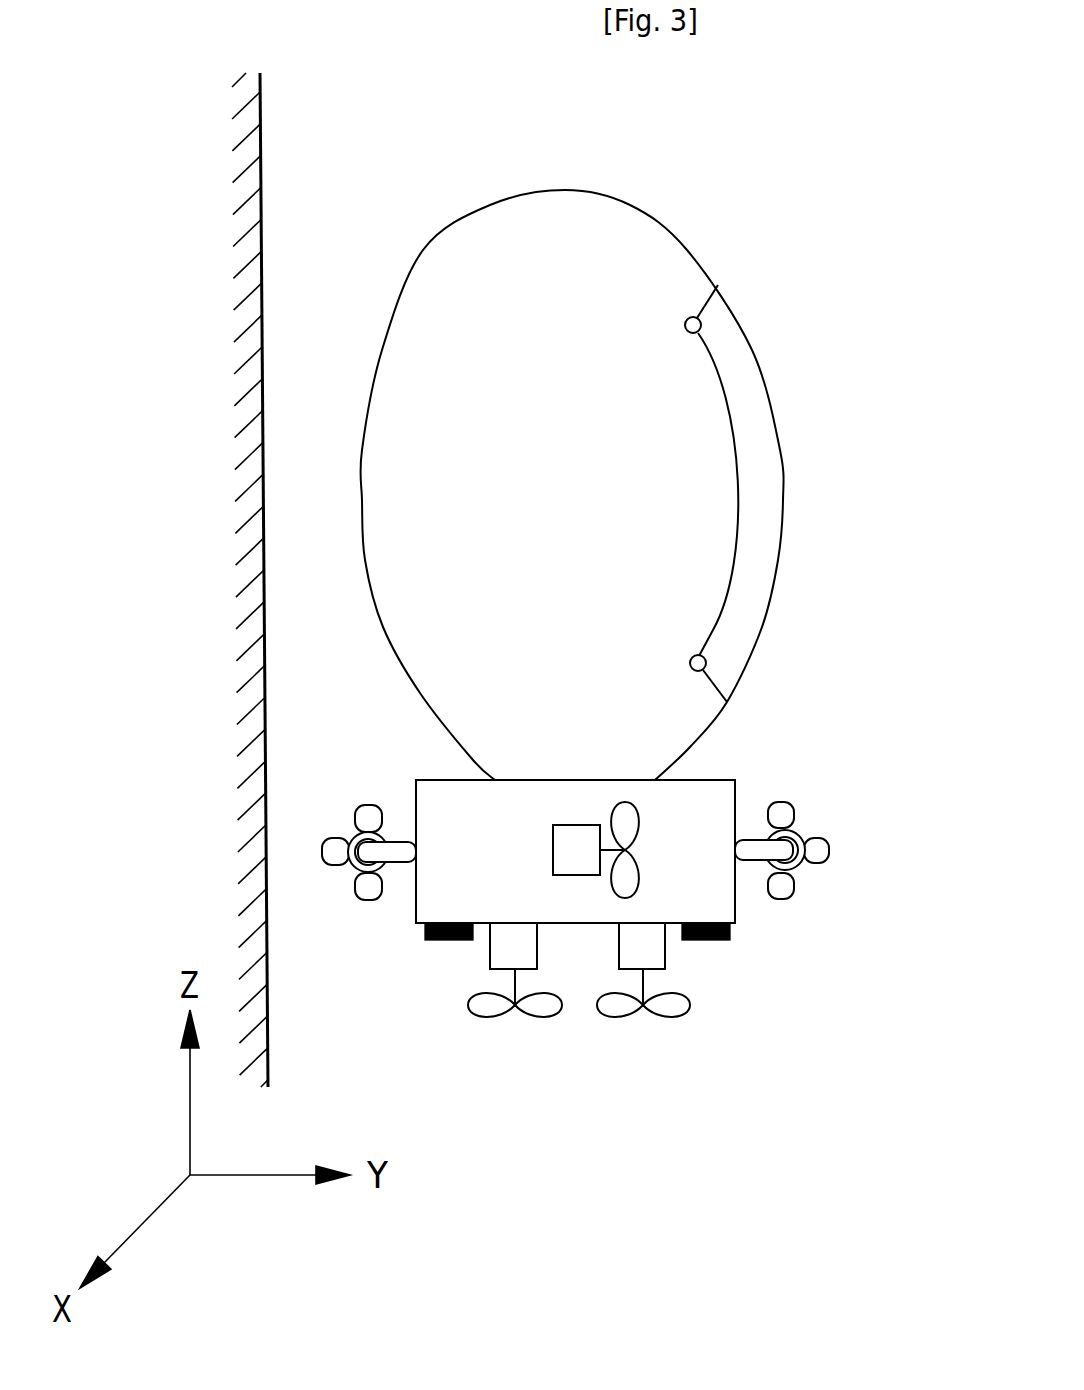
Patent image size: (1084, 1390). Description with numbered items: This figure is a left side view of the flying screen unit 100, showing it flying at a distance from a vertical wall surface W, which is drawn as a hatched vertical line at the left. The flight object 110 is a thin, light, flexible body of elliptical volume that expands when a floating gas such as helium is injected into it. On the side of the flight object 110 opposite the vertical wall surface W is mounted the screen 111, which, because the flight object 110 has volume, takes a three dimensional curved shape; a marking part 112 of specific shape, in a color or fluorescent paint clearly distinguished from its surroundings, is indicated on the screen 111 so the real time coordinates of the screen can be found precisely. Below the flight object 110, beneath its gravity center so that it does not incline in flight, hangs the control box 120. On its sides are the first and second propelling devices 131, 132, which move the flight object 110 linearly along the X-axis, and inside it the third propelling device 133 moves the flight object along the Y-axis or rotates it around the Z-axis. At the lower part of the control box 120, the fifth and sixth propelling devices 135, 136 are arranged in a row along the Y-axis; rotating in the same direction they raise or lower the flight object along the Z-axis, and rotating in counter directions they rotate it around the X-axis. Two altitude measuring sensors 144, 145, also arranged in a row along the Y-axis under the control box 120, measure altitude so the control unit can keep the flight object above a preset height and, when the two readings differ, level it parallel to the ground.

The flying screen unit 100 is at (634, 142).
The flight object 110 is at (673, 228).
The screen 111 is at (743, 357).
The marking part 112 is at (693, 317).
The control box 120 is at (725, 798).
The first propelling device 131 is at (823, 861).
The second propelling device 132 is at (365, 805).
The third propelling device 133 is at (638, 883).
The fifth propelling device 135 is at (610, 1017).
The sixth propelling device 136 is at (482, 1013).
The altitude measuring sensor 144 is at (707, 940).
The altitude measuring sensor 145 is at (447, 940).
The vertical wall surface W is at (262, 168).